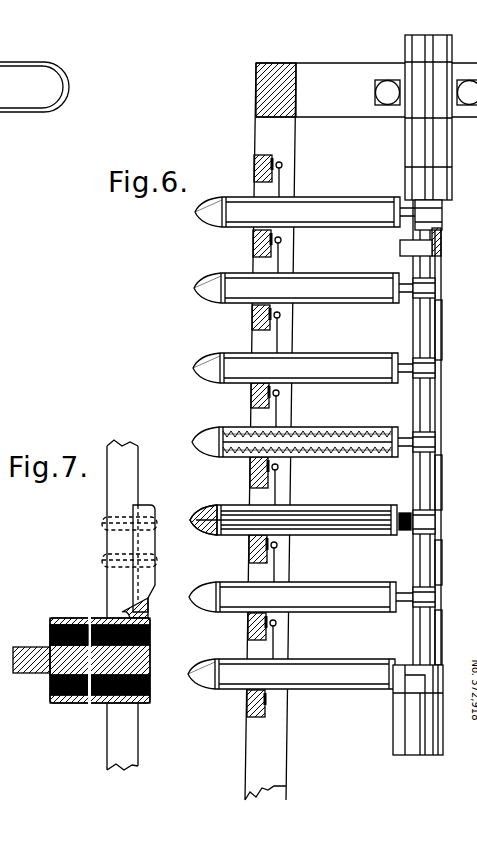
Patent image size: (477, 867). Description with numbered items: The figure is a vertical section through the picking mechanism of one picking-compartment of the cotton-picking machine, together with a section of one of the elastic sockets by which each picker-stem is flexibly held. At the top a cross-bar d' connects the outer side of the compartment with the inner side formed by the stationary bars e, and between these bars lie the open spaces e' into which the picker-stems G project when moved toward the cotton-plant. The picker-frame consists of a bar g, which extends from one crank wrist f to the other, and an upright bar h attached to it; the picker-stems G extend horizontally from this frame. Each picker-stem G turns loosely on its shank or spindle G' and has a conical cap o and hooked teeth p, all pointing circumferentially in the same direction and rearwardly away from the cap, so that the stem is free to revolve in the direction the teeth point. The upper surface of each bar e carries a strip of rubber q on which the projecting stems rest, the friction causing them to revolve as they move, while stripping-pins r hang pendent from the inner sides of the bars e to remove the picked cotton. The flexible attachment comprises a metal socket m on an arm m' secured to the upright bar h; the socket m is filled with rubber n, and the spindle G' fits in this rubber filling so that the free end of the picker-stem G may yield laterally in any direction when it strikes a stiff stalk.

In FIG. 6, the cross-bar d' is at (382, 76).
In FIG. 6, the stationary bar e is at (249, 436).
In FIG. 6, the open space e' is at (304, 431).
In FIG. 6, the conical cap o is at (205, 366).
In FIG. 6, the rubber strip q is at (281, 318).
In FIG. 6, the stripping-pin r is at (279, 335).
In FIG. 6, the bar g is at (418, 240).
In FIG. 6, the upright bar h is at (432, 320).
In FIG. 7, the upright bar h is at (126, 742).
In FIG. 6, the hooked tooth p is at (325, 429).
In FIG. 6, the picker-stem G is at (294, 457).
In FIG. 6, the shank or spindle G' is at (311, 483).
In FIG. 7, the shank or spindle G' is at (30, 677).
In FIG. 6, the arm m' is at (410, 436).
In FIG. 7, the arm m' is at (145, 561).
In FIG. 6, the wrist f is at (407, 640).
In FIG. 7, the metal socket m is at (100, 649).
In FIG. 7, the rubber filling n is at (52, 631).